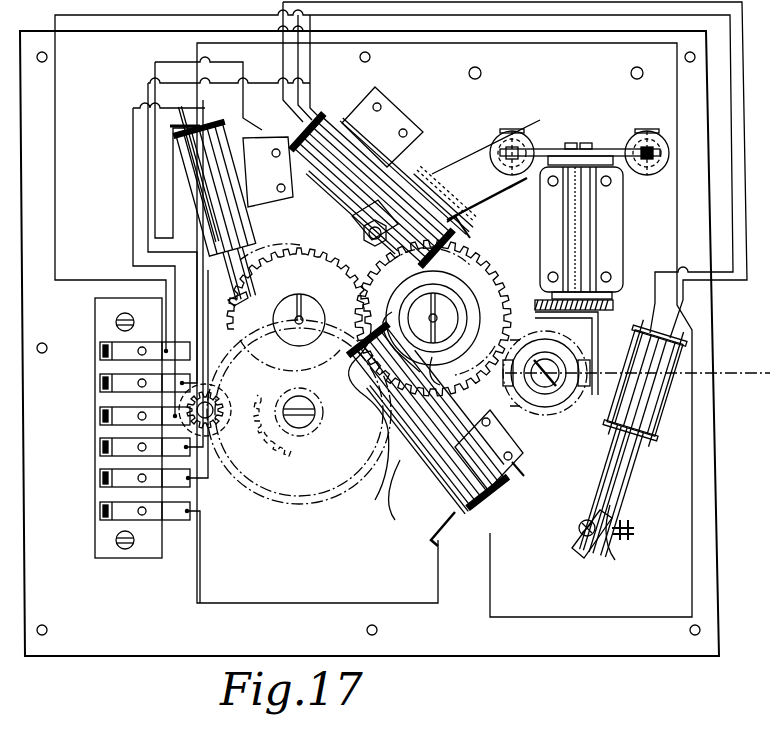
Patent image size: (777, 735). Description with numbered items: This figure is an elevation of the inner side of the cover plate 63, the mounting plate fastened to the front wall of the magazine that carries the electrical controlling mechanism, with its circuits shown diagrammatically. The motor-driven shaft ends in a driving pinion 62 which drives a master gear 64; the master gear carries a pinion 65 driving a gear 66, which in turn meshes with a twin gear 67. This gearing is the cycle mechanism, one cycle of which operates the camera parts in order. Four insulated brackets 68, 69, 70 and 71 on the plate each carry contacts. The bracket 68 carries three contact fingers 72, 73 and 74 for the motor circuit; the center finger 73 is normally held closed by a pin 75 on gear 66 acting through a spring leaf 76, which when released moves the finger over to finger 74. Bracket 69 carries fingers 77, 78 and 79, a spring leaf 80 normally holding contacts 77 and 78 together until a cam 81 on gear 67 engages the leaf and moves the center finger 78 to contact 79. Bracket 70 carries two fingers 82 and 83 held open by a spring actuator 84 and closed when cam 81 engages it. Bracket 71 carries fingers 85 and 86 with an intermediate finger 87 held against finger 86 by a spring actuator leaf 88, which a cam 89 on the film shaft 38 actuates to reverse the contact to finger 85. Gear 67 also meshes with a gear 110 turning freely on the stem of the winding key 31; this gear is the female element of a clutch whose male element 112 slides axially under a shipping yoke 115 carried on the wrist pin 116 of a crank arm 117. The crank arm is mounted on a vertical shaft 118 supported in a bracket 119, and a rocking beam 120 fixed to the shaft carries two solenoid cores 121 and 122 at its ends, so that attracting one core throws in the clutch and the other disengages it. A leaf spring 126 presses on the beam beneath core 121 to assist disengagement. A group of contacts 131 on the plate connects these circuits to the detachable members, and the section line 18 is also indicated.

The cover plate 63 is at (112, 652).
The group of contacts 131 is at (66, 415).
The contact finger 72 is at (212, 234).
The contact finger 74 is at (246, 246).
The spring leaf 76 is at (250, 230).
The insulated bracket 68 is at (268, 172).
The center contact finger 73 is at (236, 308).
The contact finger 77 is at (398, 185).
The center contact finger 78 is at (418, 188).
The contact finger 79 is at (464, 225).
The spring leaf 80 is at (366, 200).
The insulated bracket 69 is at (382, 127).
The gear 66 is at (358, 223).
The leaf spring 126 is at (486, 170).
The solenoid core 121 is at (515, 128).
The solenoid core 122 is at (627, 128).
The rocking beam 120 is at (552, 146).
The bracket 119 is at (540, 215).
The vertical shaft 118 is at (588, 227).
The crank arm 117 is at (612, 296).
The wrist pin 116 is at (536, 303).
The shipping yoke 115 is at (594, 334).
The twin gear 67 is at (506, 270).
The cam 81 is at (414, 360).
The pin 75 is at (308, 372).
The master gear 64 is at (248, 468).
The pinion 65 is at (313, 414).
The driving pinion 62 is at (216, 406).
The contact finger 82 is at (380, 470).
The contact finger 83 is at (398, 470).
The spring actuator 84 is at (425, 485).
The male clutch element 112 is at (470, 438).
The insulated bracket 70 is at (521, 473).
The winding key 31 is at (545, 400).
The section line 18 is at (735, 418).
The gear 110 is at (660, 350).
The insulated bracket 71 is at (668, 405).
The contact finger 85 is at (632, 450).
The contact finger 86 is at (616, 457).
The spring actuator leaf 88 is at (612, 485).
The intermediate contact finger 87 is at (636, 530).
The film shaft 38 is at (578, 524).
The cam 89 is at (574, 548).